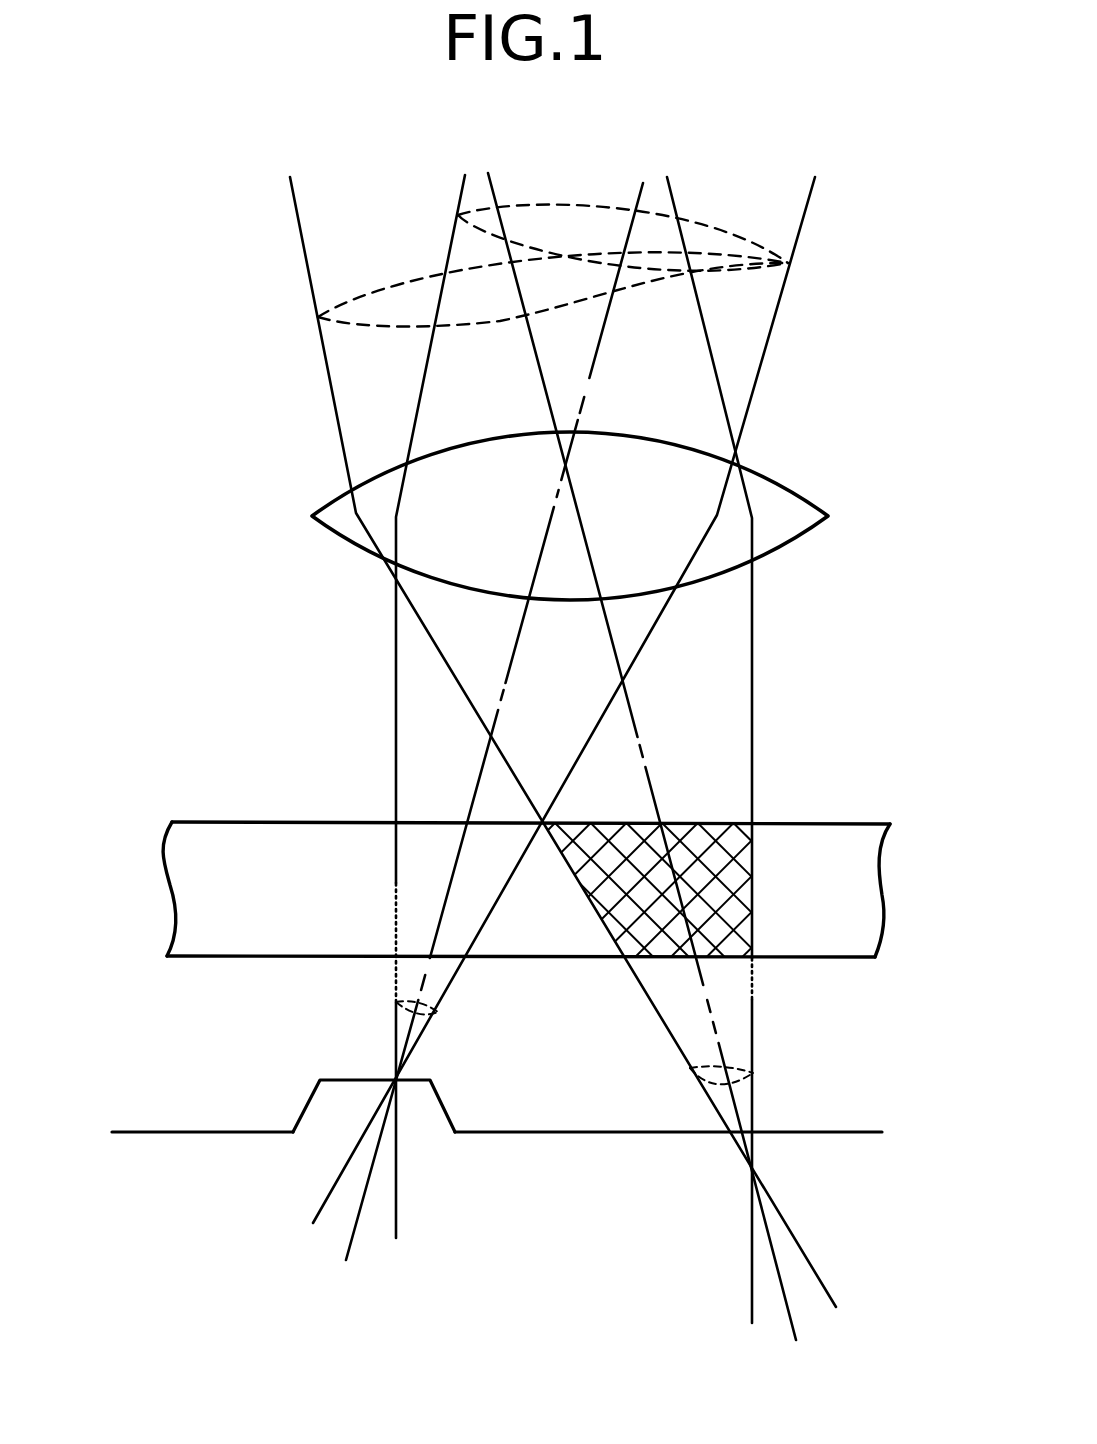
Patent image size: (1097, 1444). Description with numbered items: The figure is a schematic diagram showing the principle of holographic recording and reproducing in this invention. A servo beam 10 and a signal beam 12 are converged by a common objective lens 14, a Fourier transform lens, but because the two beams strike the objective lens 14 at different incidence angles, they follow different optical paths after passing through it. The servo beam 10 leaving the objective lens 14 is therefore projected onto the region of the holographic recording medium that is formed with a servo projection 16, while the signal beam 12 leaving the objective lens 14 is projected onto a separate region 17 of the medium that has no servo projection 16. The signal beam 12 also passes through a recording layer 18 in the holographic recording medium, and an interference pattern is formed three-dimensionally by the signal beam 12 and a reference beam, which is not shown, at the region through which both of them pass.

The servo beam 10 is at (730, 236).
The signal beam 12 is at (382, 290).
The objective lens 14 is at (312, 515).
The servo projection 16 is at (323, 1101).
The region formed with no servo projection 17 is at (823, 1133).
The recording layer 18 is at (838, 840).